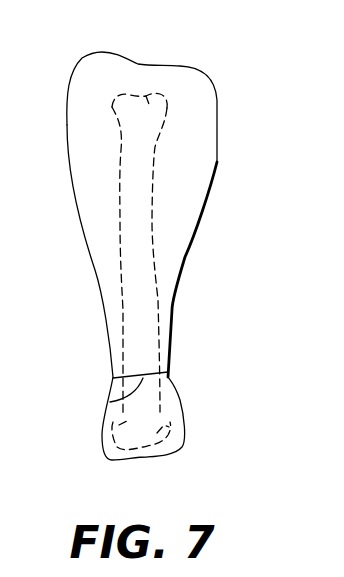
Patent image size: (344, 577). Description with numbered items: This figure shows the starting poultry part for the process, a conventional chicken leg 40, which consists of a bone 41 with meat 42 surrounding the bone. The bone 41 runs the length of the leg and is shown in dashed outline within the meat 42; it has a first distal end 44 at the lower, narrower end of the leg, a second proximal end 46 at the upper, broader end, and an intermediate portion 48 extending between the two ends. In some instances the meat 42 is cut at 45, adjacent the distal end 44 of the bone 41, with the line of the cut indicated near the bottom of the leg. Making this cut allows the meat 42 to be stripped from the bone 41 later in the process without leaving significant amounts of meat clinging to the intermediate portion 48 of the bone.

The chicken leg 40 is at (181, 256).
The bone 41 is at (145, 234).
The meat 42 is at (168, 277).
The first distal end 44 is at (177, 417).
The cut 45 is at (110, 402).
The second proximal end 46 is at (147, 93).
The intermediate portion 48 is at (137, 273).